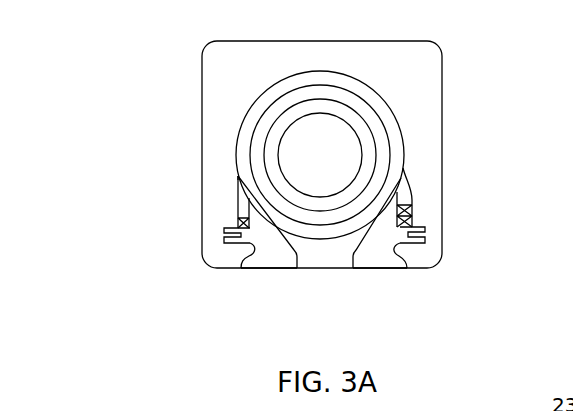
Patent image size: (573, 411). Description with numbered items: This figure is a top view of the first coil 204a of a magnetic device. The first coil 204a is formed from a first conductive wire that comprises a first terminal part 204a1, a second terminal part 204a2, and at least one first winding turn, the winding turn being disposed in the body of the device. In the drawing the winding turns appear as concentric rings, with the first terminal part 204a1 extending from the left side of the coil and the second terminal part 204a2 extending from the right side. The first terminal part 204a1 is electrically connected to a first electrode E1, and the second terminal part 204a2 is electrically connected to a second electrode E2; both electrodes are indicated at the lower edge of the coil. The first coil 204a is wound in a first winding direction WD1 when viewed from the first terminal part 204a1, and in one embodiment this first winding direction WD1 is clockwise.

The first coil 204a is at (396, 119).
The first terminal part 204a1 is at (249, 198).
The second terminal part 204a2 is at (410, 215).
The first winding direction WD1 is at (236, 178).
The first electrode E1 is at (272, 268).
The second electrode E2 is at (375, 268).